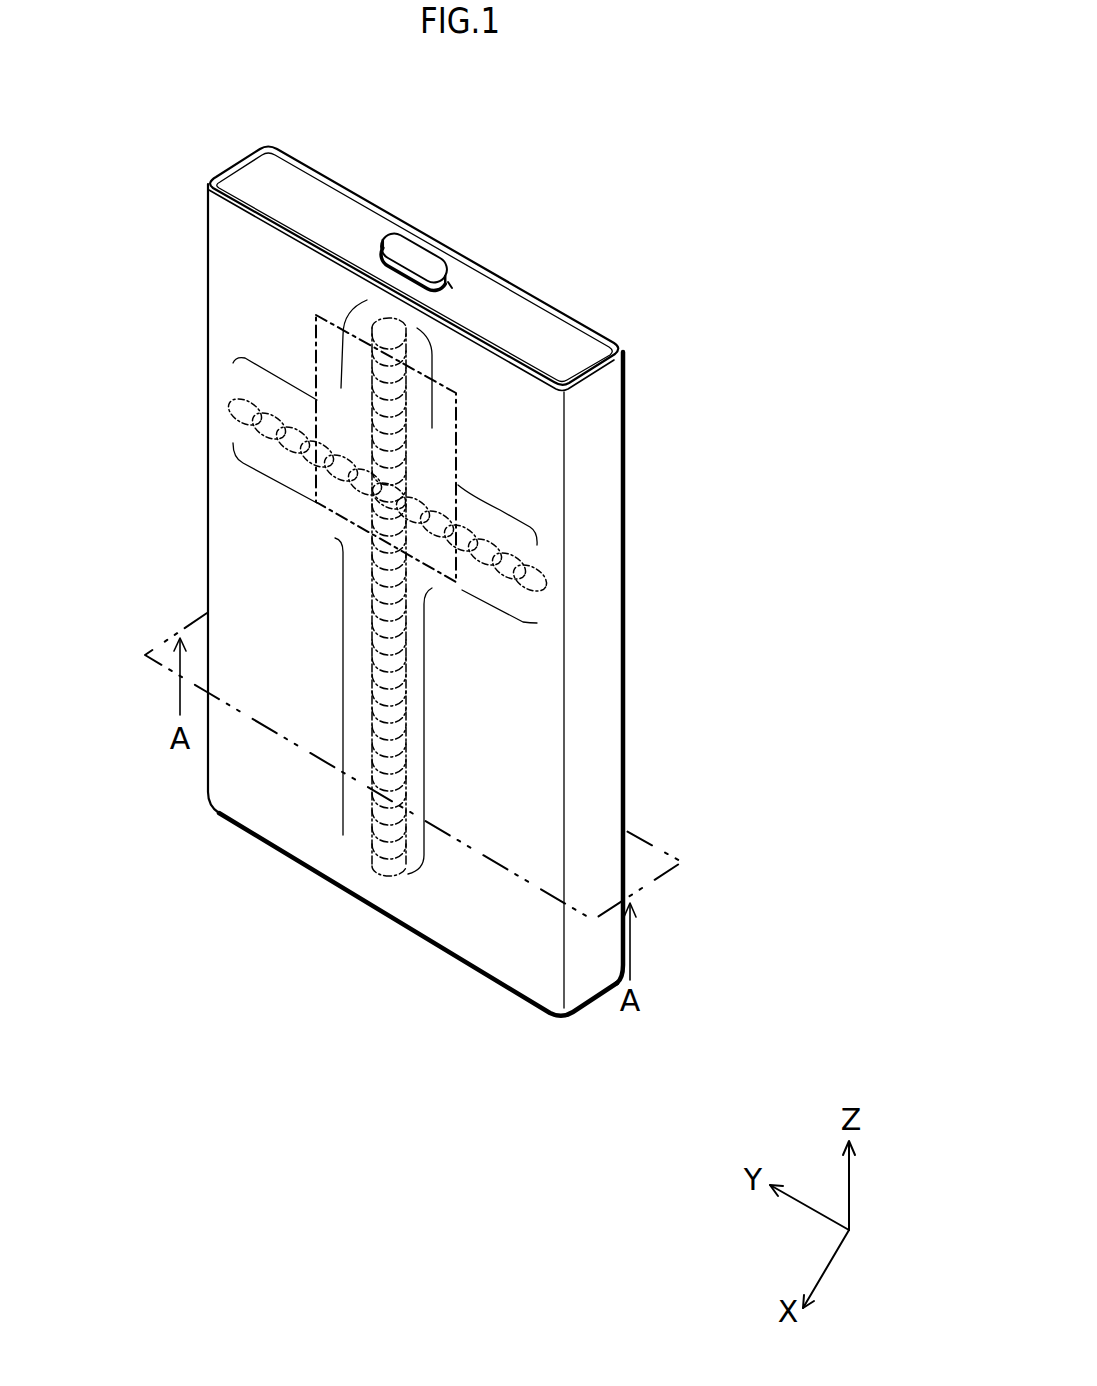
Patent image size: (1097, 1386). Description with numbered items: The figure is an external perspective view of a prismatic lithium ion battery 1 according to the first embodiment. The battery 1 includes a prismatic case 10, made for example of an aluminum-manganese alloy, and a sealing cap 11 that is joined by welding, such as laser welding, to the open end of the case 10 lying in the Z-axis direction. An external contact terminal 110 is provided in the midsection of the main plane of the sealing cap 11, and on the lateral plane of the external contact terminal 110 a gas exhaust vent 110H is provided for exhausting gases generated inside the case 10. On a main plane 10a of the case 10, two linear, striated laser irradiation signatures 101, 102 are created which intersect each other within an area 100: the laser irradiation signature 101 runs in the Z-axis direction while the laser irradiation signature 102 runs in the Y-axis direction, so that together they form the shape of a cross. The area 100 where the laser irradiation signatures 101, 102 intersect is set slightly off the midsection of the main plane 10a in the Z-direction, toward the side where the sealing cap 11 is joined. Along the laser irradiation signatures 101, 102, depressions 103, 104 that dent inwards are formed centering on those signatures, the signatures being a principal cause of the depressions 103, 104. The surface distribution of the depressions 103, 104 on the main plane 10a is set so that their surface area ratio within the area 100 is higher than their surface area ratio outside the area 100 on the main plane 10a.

The prismatic lithium ion battery 1 is at (646, 112).
The prismatic case 10 is at (612, 378).
The main plane 10a is at (502, 653).
The sealing cap 11 is at (285, 178).
The external contact terminal 110 is at (426, 252).
The gas exhaust vent 110H is at (455, 285).
The area 100 is at (313, 347).
The laser irradiation signature 101 is at (396, 848).
The laser irradiation signature 102 is at (506, 550).
The depression 103 is at (345, 836).
The depression 104 is at (512, 511).